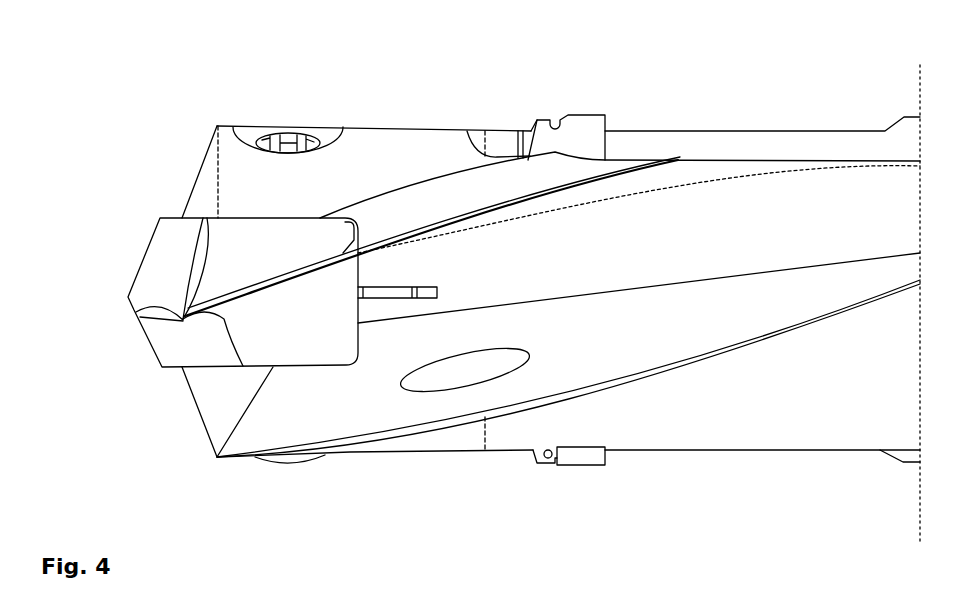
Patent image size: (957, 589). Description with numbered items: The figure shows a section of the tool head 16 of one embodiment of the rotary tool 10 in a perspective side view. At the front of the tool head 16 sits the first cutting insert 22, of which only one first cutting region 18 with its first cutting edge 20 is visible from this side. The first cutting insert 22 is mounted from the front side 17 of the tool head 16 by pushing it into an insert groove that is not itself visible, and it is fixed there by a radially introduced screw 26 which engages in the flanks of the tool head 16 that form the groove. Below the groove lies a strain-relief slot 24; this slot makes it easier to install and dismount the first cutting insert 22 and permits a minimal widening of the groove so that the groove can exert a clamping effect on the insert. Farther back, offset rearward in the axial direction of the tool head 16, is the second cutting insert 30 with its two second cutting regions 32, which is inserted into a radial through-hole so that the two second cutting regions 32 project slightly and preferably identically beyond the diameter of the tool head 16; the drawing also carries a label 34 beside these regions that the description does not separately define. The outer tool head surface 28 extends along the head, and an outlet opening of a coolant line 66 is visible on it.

The rotary tool 10 is at (201, 84).
The tool head 16 is at (842, 437).
The front side 17 is at (110, 343).
The first cutting region 18 is at (369, 253).
The first cutting edge 20 is at (177, 233).
The first cutting insert 22 is at (150, 308).
The strain-relief slot 24 is at (387, 292).
The screw 26 is at (286, 132).
The tool head surface 28 is at (731, 458).
The second cutting insert 30 is at (535, 125).
The second cutting region 32 is at (601, 296).
The support pad 34 is at (567, 116).
The coolant line 66 is at (497, 362).